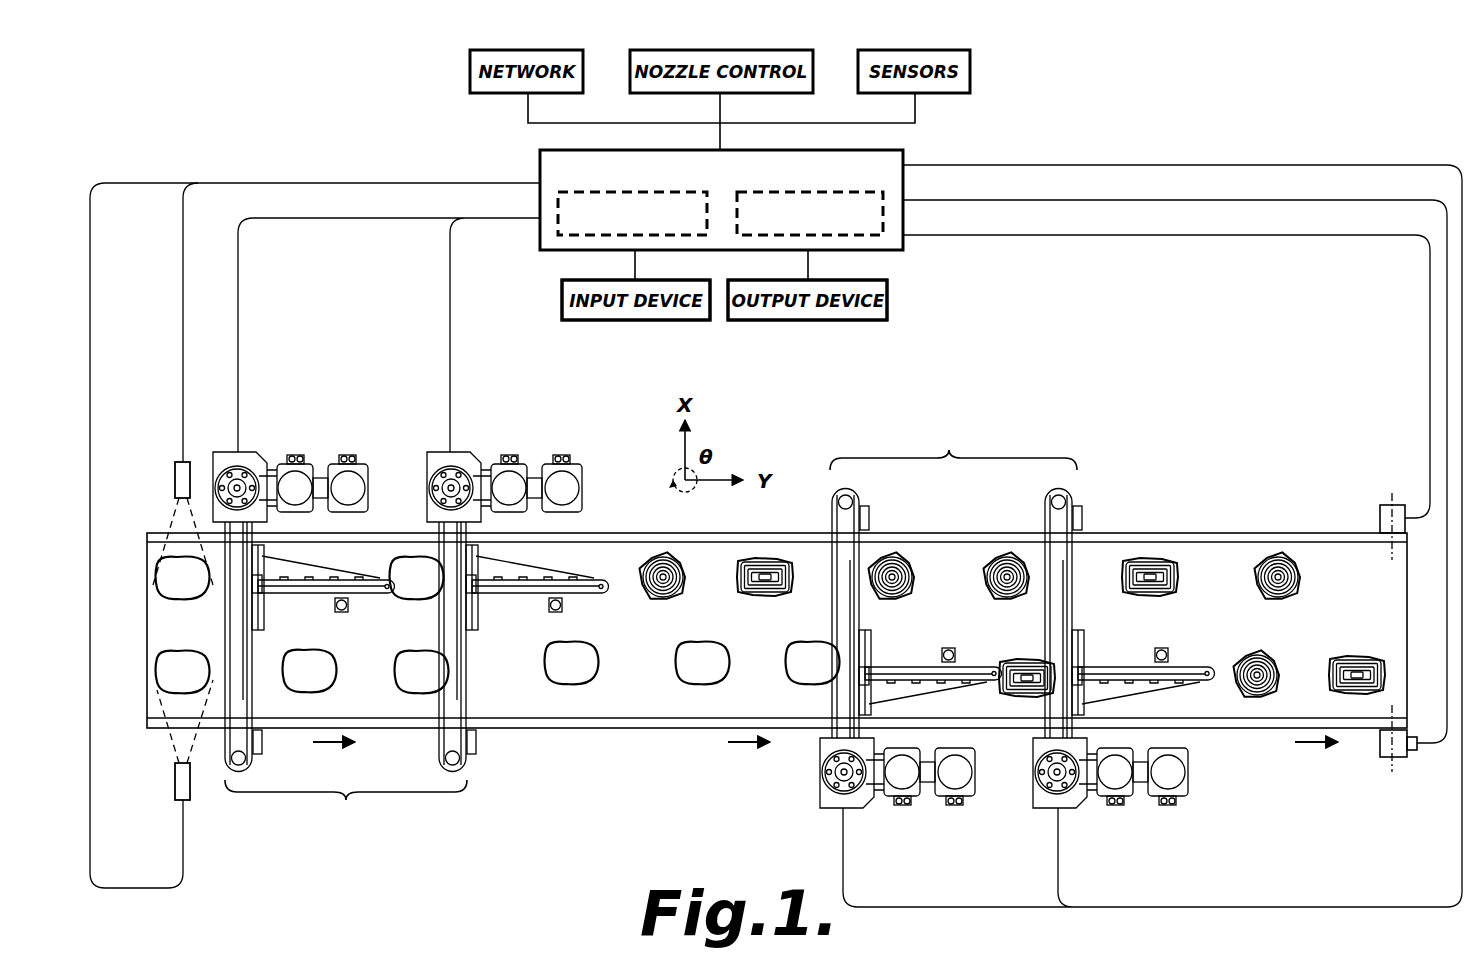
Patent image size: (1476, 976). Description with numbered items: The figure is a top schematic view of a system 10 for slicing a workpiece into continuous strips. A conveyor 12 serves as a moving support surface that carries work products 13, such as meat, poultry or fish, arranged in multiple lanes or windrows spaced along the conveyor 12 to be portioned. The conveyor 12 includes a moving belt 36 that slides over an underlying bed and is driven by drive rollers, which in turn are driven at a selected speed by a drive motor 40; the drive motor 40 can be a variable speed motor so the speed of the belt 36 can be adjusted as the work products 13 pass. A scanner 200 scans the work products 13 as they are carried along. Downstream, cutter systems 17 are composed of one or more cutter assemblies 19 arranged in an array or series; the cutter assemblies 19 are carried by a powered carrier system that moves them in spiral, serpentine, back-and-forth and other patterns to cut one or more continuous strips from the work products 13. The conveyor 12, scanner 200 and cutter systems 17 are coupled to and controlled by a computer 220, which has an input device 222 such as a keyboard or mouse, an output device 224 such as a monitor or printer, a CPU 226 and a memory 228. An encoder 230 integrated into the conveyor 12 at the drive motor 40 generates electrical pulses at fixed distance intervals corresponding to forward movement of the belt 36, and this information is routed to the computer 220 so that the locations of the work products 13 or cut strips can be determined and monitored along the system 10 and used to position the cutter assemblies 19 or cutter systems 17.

The system 10 is at (258, 98).
The conveyor 12 is at (400, 535).
The work products 13 is at (186, 578).
The cutter systems 17 is at (651, 631).
The cutter assemblies 19 is at (292, 434).
The moving belt 36 is at (1337, 590).
The drive motor 40 is at (1400, 758).
The scanner 200 is at (175, 482).
The computer 220 is at (540, 160).
The input device 222 is at (630, 320).
The output device 224 is at (850, 320).
The CPU 226 is at (558, 235).
The memory 228 is at (883, 235).
The encoder 230 is at (1417, 752).